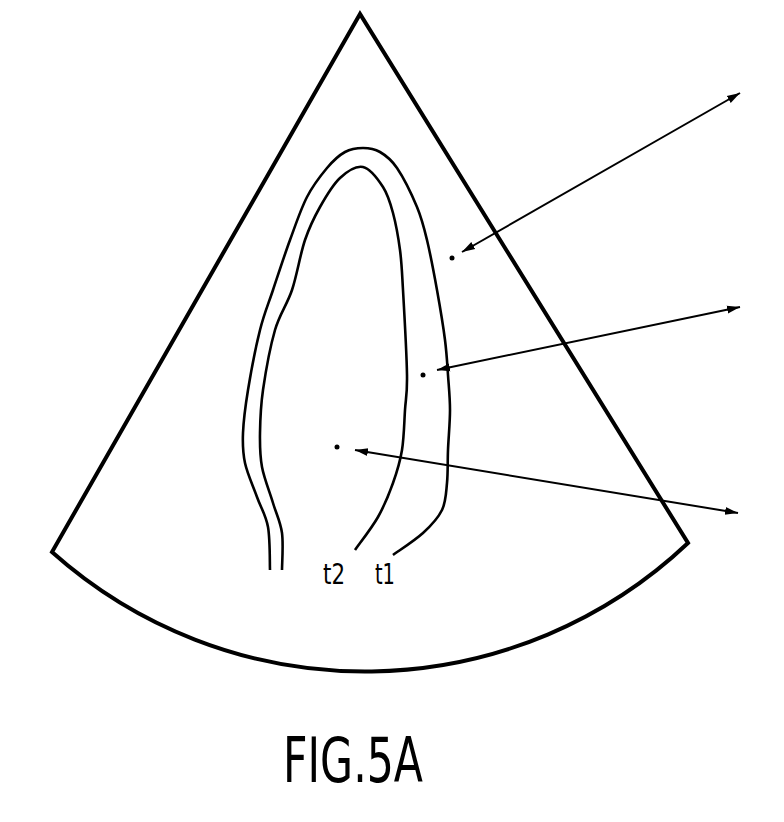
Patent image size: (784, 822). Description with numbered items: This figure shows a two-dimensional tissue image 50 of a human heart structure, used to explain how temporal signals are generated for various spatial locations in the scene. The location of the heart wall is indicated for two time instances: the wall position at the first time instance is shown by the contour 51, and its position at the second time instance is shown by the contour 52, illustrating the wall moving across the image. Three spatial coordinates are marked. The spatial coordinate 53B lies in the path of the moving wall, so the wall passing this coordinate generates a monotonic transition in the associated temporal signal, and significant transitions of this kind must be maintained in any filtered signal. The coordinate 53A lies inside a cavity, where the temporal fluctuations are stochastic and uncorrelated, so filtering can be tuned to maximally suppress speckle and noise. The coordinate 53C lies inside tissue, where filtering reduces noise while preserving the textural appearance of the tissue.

The 2D tissue image 50 is at (303, 107).
The wall location at time t1 51 is at (327, 172).
The wall location at time t2 52 is at (312, 235).
The cavity 53A is at (322, 443).
The spatial coordinate 53B is at (403, 372).
The tissue 53C is at (433, 262).